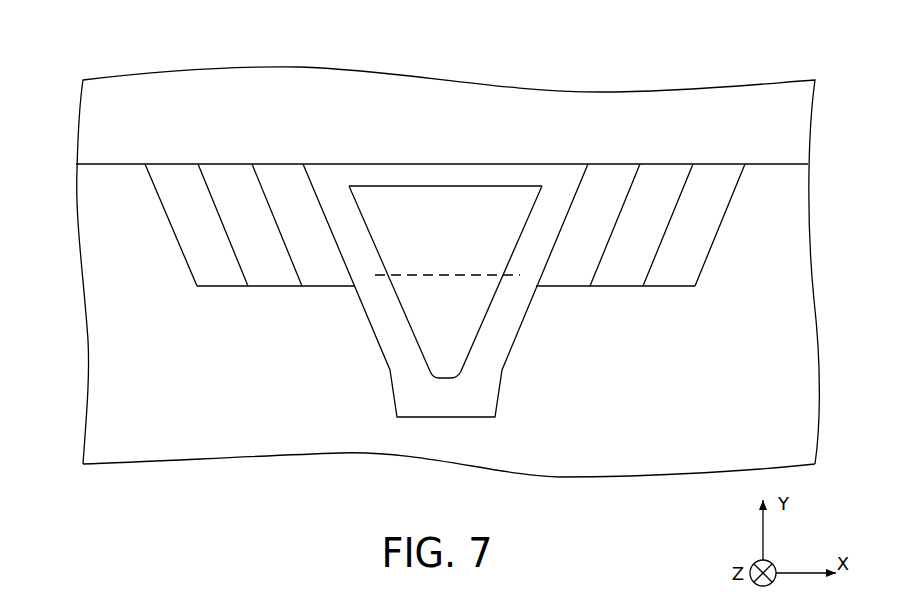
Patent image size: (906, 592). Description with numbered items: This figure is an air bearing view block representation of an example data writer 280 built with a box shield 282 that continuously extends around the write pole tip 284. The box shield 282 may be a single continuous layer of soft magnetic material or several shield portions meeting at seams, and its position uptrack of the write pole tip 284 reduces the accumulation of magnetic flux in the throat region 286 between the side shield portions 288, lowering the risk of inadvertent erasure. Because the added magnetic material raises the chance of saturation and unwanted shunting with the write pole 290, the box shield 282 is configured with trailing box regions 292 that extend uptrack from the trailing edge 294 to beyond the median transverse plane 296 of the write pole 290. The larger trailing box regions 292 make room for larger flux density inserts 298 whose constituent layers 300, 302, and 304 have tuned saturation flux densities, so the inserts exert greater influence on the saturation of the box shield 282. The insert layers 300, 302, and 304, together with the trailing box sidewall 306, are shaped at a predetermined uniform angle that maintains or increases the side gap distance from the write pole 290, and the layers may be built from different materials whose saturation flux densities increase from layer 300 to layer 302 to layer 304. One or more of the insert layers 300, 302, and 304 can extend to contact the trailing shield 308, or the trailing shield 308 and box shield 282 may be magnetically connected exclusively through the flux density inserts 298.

The data writer 280 is at (428, 261).
The box shield 282 is at (172, 462).
The write pole tip 284 is at (445, 378).
The throat region 286 is at (445, 447).
The side shield portions 288 is at (85, 188).
The write pole 290 is at (445, 298).
The trailing box regions 292 is at (282, 286).
The trailing edge 294 is at (515, 186).
The median transverse plane 296 is at (455, 276).
The flux density inserts 298 is at (318, 267).
The first insert layer 300 is at (290, 243).
The second insert layer 302 is at (239, 243).
The third insert layer 304 is at (184, 243).
The trailing box sidewall 306 is at (183, 263).
The trailing shield 308 is at (85, 133).